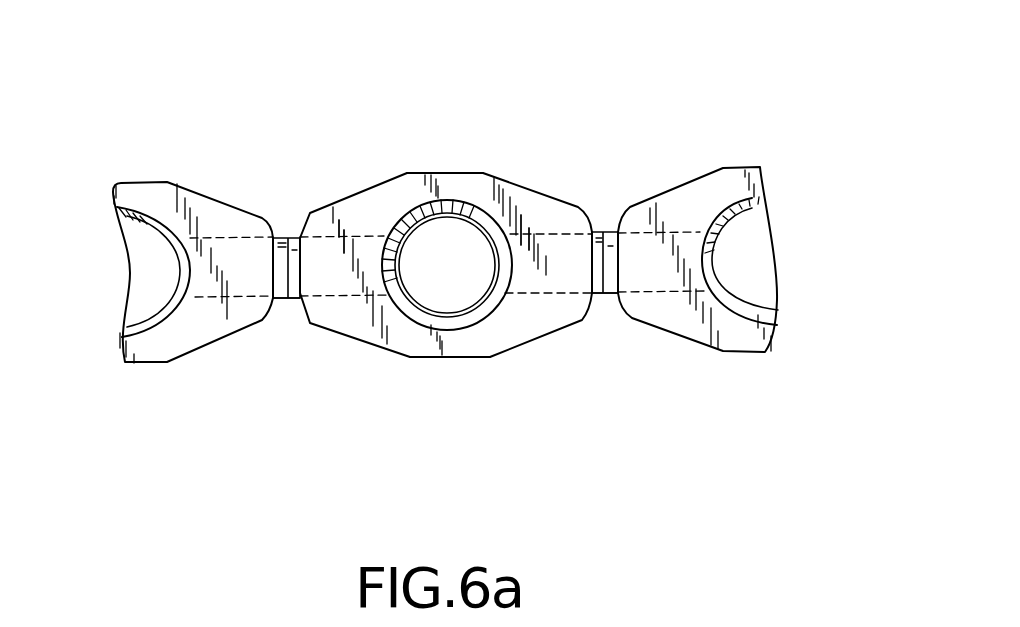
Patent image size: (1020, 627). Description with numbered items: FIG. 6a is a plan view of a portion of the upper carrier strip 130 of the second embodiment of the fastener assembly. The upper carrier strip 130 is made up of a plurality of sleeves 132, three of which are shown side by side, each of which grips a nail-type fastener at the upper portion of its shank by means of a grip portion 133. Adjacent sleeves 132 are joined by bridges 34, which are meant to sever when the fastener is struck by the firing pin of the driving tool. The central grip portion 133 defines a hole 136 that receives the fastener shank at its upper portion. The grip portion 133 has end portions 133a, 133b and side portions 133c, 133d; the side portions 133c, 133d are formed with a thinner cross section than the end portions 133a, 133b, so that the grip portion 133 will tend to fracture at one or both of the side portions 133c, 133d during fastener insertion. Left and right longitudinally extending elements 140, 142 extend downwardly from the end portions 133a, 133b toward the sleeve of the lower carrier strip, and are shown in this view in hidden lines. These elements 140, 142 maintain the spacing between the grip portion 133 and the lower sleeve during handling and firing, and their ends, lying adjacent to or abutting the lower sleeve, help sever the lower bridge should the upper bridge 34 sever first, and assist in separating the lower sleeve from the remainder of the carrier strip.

The bridge 34 is at (282, 238).
The upper carrier strip 130 is at (445, 260).
The sleeve 132 is at (447, 140).
The grip portion 133 is at (303, 232).
The end portion 133a is at (618, 295).
The end portion 133b is at (307, 300).
The side portion 133c is at (473, 173).
The side portion 133d is at (445, 352).
The hole 136 is at (430, 290).
The longitudinally extending element 140 is at (368, 232).
The longitudinally extending element 142 is at (538, 232).